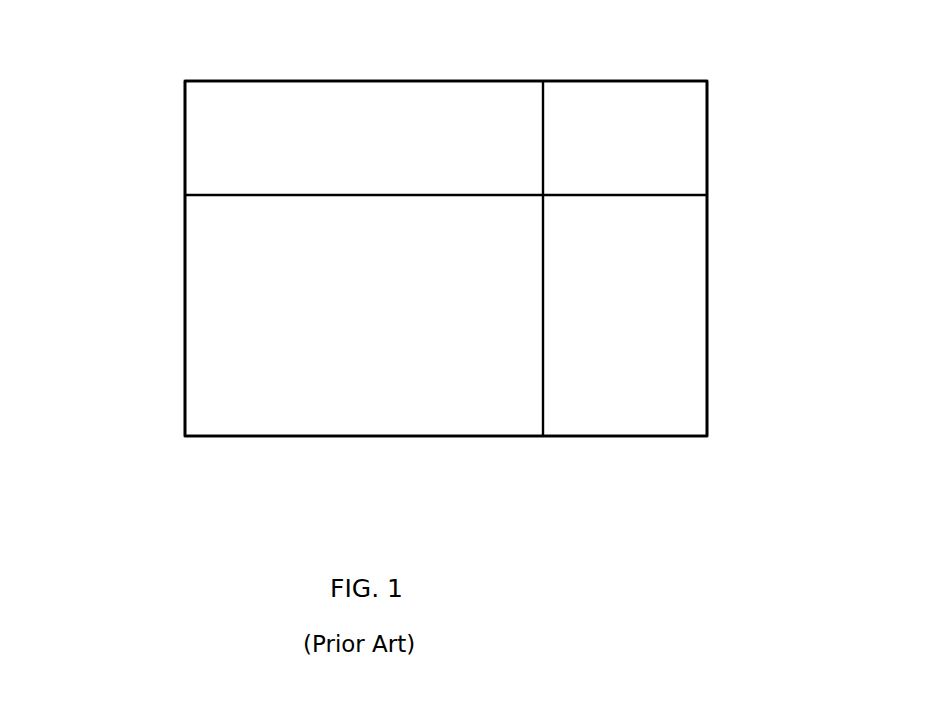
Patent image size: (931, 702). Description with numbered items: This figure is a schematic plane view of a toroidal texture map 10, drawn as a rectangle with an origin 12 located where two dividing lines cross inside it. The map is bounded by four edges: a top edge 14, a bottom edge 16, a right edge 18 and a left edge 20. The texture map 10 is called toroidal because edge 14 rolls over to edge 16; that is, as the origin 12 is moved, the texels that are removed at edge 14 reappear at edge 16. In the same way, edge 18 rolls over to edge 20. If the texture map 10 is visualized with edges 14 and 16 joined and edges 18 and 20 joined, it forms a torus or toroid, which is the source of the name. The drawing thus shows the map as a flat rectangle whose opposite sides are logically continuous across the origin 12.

The toroidal texture map 10 is at (641, 572).
The origin 12 is at (499, 258).
The edge 14 is at (446, 56).
The edge 16 is at (446, 463).
The edge 18 is at (779, 258).
The edge 20 is at (112, 258).